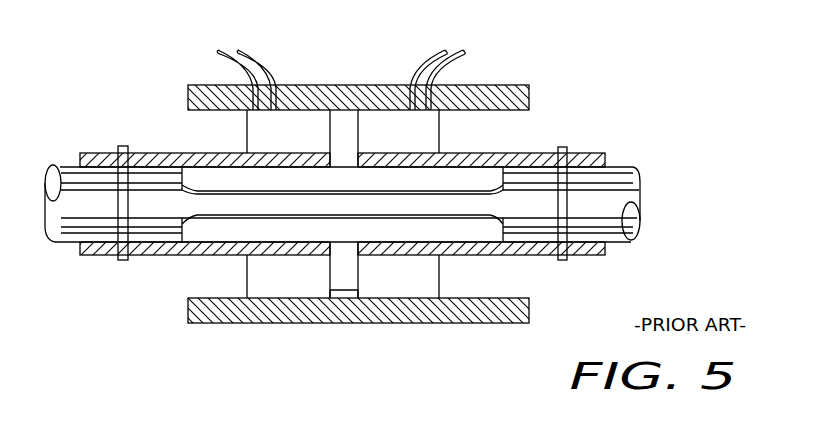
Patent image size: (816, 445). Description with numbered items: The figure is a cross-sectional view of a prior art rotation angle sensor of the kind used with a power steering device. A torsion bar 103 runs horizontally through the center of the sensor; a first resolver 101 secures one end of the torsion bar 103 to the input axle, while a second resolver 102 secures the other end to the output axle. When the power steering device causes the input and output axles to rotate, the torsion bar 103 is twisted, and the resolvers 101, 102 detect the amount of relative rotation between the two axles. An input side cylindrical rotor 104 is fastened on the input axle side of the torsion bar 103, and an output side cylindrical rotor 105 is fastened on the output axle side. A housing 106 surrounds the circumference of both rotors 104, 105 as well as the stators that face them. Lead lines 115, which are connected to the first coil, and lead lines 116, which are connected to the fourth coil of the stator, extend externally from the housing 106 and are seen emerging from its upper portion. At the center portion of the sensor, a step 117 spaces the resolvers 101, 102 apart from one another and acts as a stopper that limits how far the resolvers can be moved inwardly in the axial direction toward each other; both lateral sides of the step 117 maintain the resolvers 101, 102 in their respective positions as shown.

The first resolver 101 is at (432, 137).
The second resolver 102 is at (262, 136).
The torsion bar 103 is at (640, 181).
The input side cylindrical rotor 104 is at (483, 253).
The output side cylindrical rotor 105 is at (160, 257).
The housing 106 is at (522, 97).
The lead lines 115 is at (456, 56).
The lead lines 116 is at (420, 63).
The step 117 is at (331, 283).